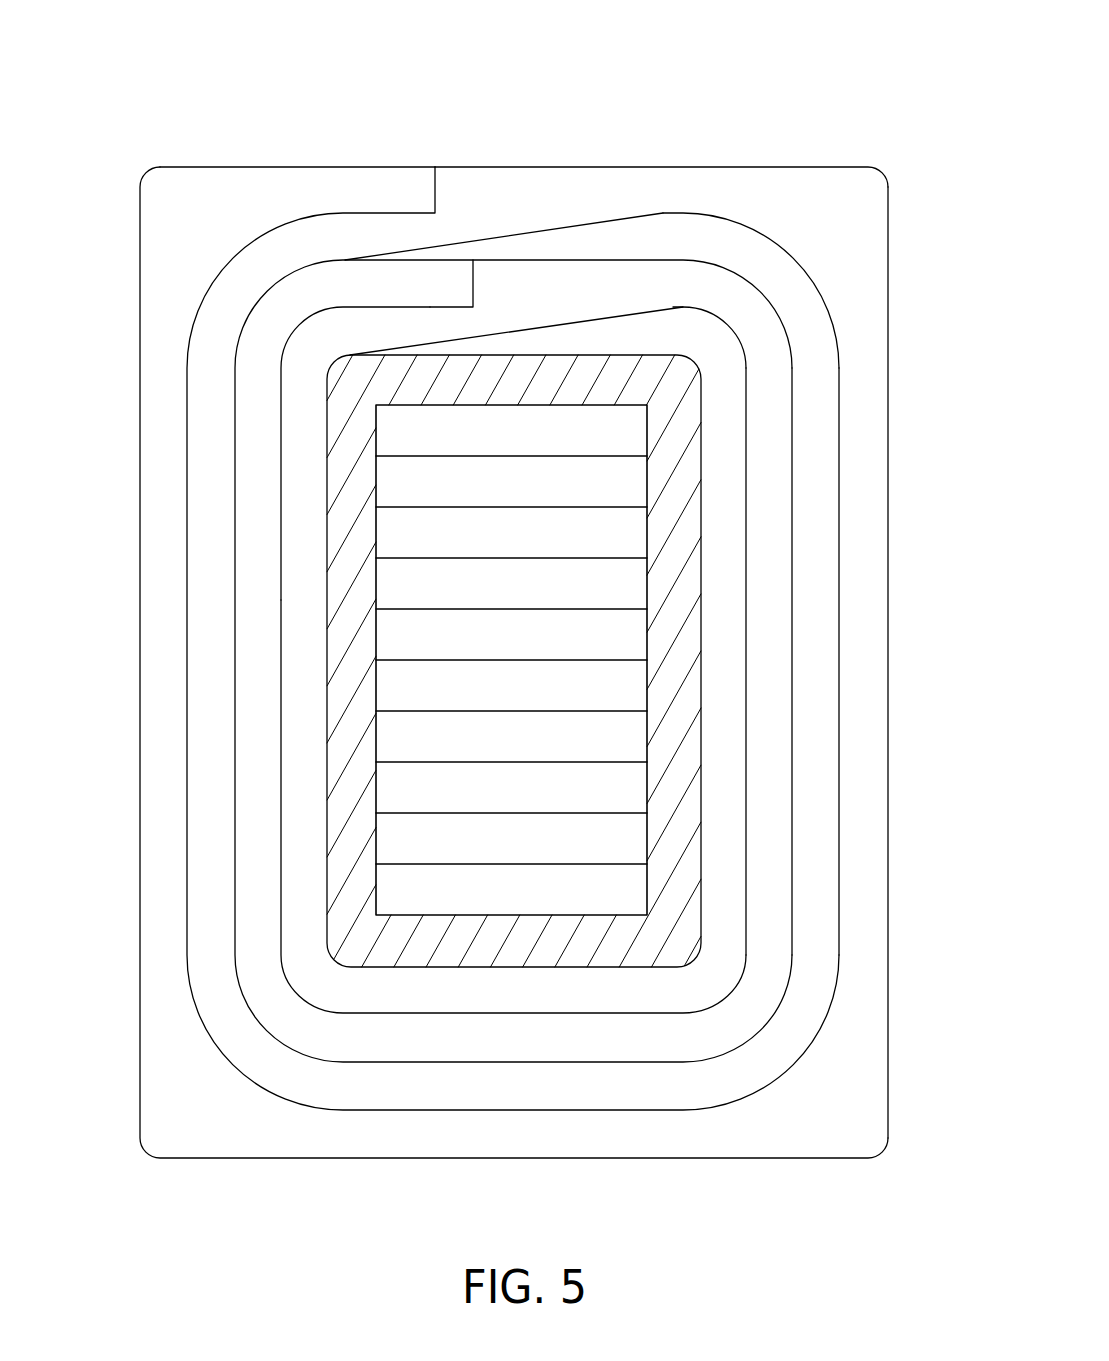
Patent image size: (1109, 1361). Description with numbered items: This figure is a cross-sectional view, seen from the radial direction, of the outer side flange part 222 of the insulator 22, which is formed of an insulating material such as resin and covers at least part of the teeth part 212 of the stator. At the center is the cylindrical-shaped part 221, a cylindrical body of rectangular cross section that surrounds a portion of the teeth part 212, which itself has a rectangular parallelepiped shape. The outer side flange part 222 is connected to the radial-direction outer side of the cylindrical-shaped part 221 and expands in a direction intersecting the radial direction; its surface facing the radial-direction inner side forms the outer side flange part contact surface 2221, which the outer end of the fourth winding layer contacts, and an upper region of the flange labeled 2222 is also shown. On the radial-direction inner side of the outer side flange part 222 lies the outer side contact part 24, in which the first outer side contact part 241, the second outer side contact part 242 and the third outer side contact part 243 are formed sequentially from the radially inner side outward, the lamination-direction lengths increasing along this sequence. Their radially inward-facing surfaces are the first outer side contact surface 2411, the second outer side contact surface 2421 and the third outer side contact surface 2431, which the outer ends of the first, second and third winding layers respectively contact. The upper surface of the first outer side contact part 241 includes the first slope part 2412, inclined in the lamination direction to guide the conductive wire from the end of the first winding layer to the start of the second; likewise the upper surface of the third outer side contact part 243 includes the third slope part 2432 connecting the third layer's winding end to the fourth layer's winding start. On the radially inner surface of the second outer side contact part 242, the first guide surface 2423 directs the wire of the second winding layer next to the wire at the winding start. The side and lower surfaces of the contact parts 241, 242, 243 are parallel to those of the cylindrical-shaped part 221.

The insulator 22 is at (597, 113).
The outer side flange part 222 is at (810, 178).
The outer side flange part contact surface 2221 is at (883, 223).
The frame top portion 2222 is at (360, 183).
The outer side contact part 24 is at (186, 520).
The first outer side contact part 241 is at (287, 652).
The second outer side contact part 242 is at (257, 733).
The third outer side contact part 243 is at (213, 847).
The first outer side contact surface 2411 is at (732, 613).
The first slope part 2412 is at (570, 322).
The second outer side contact surface 2421 is at (782, 673).
The first guide surface 2423 is at (452, 272).
The third outer side contact surface 2431 is at (820, 737).
The third slope part 2432 is at (570, 222).
The cylindrical-shaped part 221 is at (573, 940).
The teeth part 212 is at (625, 526).